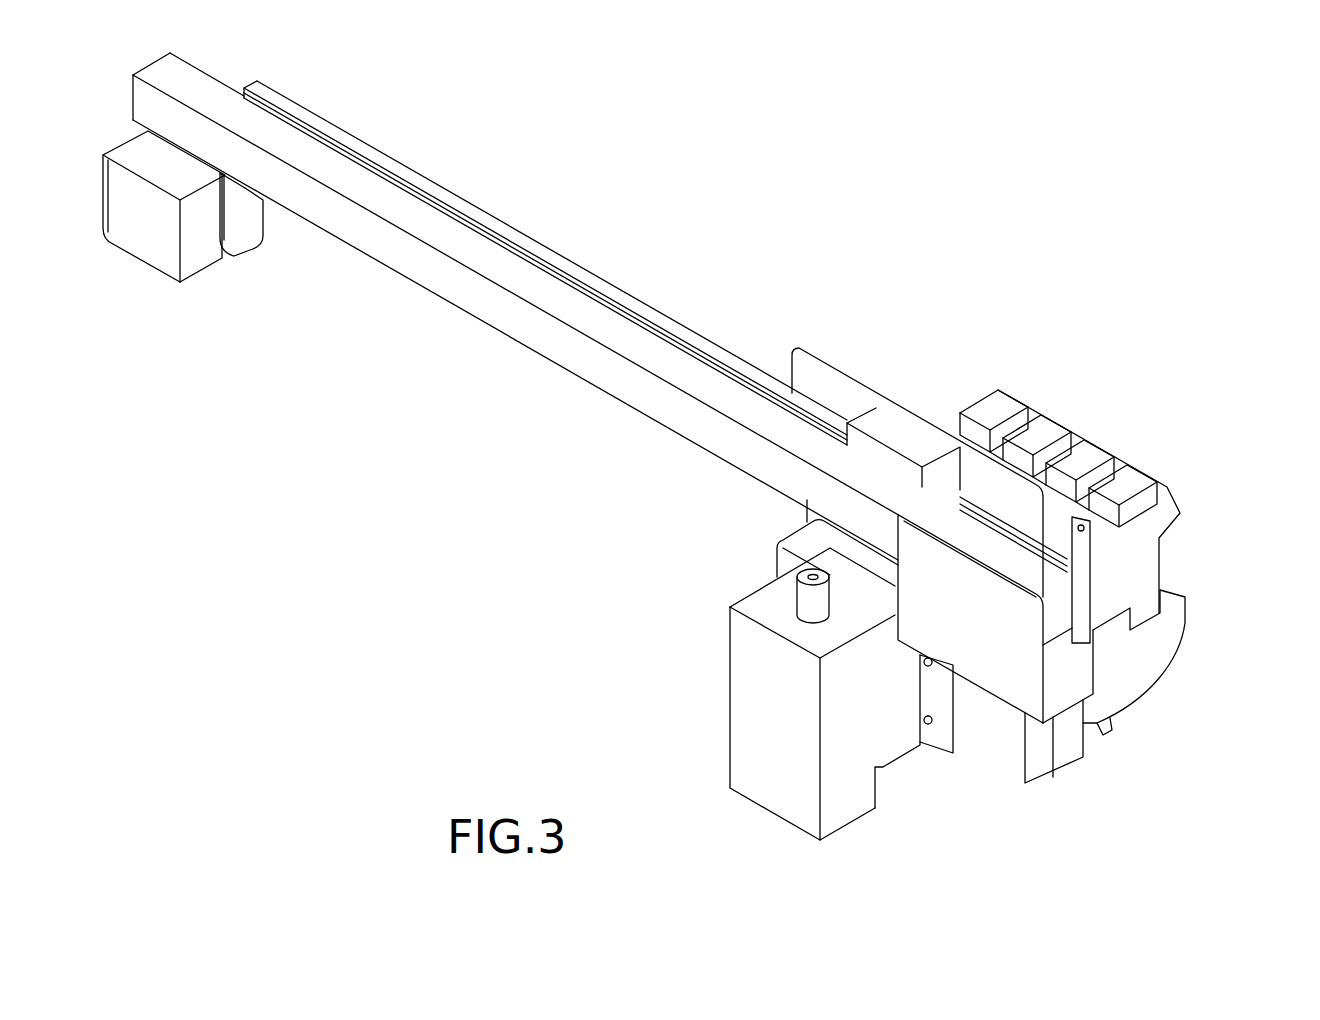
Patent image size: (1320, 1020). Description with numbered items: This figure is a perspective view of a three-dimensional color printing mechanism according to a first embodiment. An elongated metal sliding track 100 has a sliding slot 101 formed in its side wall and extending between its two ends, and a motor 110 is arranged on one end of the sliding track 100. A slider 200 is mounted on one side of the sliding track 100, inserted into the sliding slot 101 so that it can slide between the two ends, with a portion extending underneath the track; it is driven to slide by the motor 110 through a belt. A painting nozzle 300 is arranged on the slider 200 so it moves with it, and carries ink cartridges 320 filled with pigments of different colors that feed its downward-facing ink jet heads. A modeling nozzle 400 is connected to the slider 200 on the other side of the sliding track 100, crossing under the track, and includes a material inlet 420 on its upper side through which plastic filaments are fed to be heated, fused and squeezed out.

The sliding track 100 is at (467, 290).
The sliding slot 101 is at (578, 275).
The motor 110 is at (137, 237).
The slider 200 is at (900, 430).
The painting nozzle 300 is at (1122, 448).
The ink cartridge 320 is at (1133, 562).
The modeling nozzle 400 is at (730, 663).
The material inlet 420 is at (805, 592).